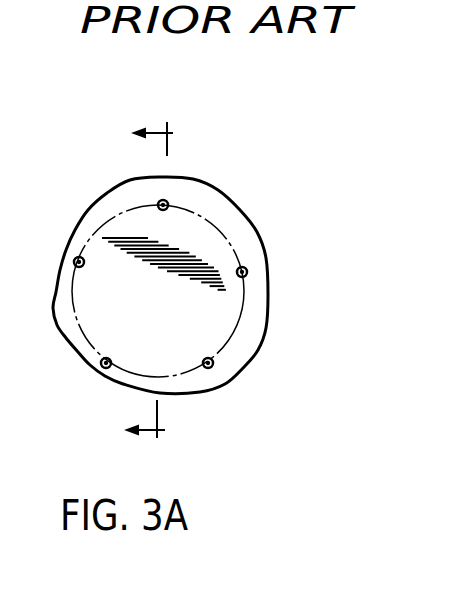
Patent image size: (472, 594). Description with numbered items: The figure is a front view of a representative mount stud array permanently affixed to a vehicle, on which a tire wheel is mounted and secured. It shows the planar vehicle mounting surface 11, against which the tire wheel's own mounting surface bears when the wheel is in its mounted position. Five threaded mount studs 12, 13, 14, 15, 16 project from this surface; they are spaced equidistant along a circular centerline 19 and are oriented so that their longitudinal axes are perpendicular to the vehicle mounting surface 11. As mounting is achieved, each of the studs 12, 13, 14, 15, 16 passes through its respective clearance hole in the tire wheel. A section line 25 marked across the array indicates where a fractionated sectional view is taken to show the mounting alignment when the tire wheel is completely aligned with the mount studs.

The vehicle mounting surface 11 is at (215, 322).
The threaded mount stud 12 is at (247, 273).
The threaded mount stud 13 is at (210, 368).
The threaded mount stud 14 is at (104, 368).
The threaded mount stud 15 is at (76, 257).
The threaded mount stud 16 is at (159, 200).
The circular centerline 19 is at (213, 227).
The section line 25 is at (163, 282).